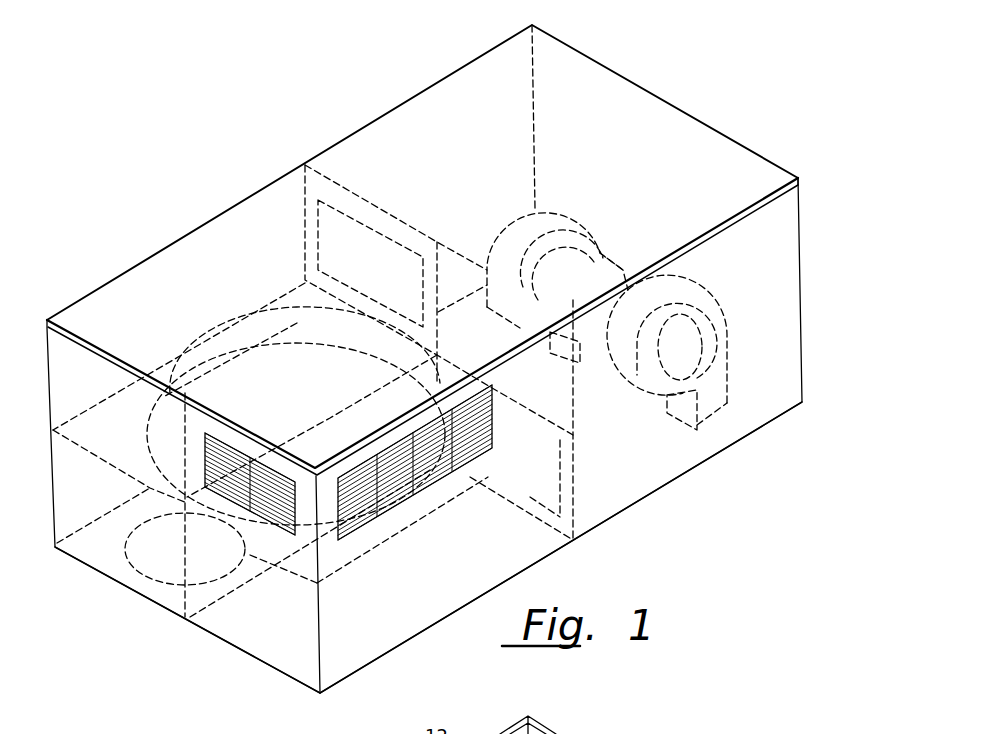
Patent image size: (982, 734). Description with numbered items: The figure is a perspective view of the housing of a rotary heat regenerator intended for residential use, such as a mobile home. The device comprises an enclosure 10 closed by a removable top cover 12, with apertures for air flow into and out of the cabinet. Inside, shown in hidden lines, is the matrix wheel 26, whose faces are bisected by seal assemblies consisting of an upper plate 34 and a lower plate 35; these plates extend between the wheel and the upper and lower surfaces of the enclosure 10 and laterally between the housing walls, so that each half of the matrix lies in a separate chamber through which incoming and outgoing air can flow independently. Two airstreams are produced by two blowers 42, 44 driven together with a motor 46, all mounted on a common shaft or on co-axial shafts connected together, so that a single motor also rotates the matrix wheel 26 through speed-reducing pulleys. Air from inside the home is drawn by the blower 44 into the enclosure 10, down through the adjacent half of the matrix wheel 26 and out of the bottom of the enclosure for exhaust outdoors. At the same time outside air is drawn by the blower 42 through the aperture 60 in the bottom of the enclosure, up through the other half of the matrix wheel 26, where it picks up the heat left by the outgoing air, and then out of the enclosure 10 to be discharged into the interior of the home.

The enclosure 10 is at (718, 454).
The removable top cover 12 is at (418, 94).
The matrix wheel 26 is at (148, 441).
The upper plate 34 is at (297, 323).
The lower plate 35 is at (250, 585).
The blower 42 is at (560, 210).
The blower 44 is at (705, 283).
The motor 46 is at (628, 268).
The aperture 60 is at (138, 579).